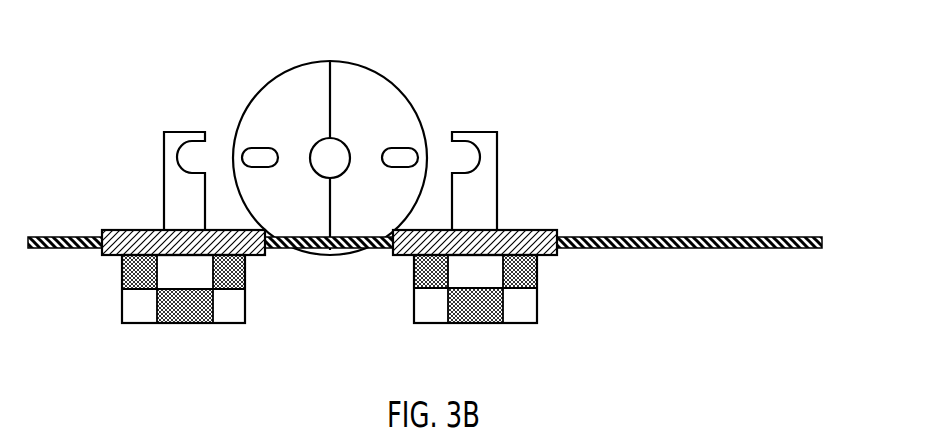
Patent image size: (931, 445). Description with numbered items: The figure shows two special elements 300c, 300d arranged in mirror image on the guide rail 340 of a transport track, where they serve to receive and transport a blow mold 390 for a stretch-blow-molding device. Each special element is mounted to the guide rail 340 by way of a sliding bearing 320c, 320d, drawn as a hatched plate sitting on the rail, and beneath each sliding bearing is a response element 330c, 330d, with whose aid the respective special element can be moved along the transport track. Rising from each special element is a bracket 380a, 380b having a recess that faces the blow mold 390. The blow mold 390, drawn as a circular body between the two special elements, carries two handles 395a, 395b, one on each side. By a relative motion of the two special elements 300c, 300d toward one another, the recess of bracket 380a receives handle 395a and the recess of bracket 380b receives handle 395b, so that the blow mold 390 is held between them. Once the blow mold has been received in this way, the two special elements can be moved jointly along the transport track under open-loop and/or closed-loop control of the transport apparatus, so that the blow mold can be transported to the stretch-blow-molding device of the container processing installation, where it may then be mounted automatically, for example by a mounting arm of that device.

The blow mold 390 is at (330, 140).
The handle 395a is at (262, 148).
The handle 395b is at (397, 148).
The guide rail 340 is at (767, 237).
The special element 300c is at (195, 275).
The special element 300d is at (500, 273).
The sliding bearing 320c is at (260, 257).
The sliding bearing 320d is at (550, 257).
The response element 330c is at (177, 325).
The response element 330d is at (468, 325).
The bracket 380a is at (180, 132).
The bracket 380b is at (480, 133).